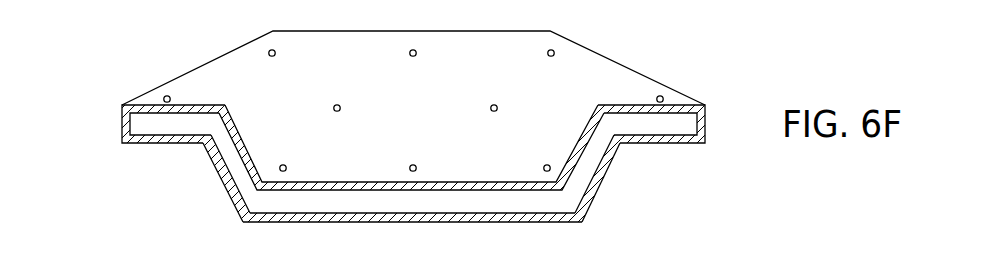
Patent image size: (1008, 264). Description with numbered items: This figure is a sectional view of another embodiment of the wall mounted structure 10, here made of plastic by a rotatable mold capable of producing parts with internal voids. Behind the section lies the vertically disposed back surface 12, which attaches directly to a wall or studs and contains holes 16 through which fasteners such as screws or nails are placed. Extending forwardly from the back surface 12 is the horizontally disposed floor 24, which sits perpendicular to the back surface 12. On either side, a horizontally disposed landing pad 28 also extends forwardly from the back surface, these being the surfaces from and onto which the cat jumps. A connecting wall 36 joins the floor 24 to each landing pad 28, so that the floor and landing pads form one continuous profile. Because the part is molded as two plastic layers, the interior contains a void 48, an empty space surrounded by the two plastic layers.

The wall mounted structure 10 is at (117, 187).
The back surface 12 is at (413, 59).
The holes 16 is at (413, 86).
The floor 24 is at (455, 168).
The landing pad 28 is at (413, 91).
The connecting wall 36 is at (418, 187).
The void 48 is at (412, 231).